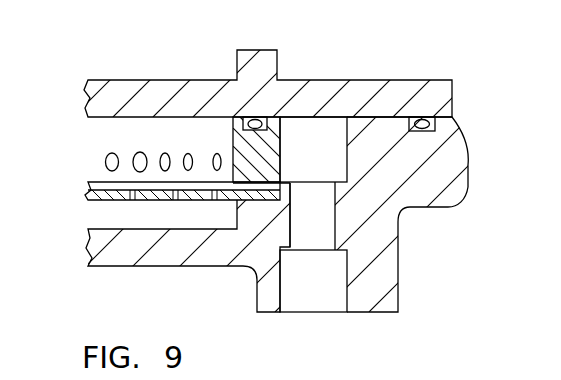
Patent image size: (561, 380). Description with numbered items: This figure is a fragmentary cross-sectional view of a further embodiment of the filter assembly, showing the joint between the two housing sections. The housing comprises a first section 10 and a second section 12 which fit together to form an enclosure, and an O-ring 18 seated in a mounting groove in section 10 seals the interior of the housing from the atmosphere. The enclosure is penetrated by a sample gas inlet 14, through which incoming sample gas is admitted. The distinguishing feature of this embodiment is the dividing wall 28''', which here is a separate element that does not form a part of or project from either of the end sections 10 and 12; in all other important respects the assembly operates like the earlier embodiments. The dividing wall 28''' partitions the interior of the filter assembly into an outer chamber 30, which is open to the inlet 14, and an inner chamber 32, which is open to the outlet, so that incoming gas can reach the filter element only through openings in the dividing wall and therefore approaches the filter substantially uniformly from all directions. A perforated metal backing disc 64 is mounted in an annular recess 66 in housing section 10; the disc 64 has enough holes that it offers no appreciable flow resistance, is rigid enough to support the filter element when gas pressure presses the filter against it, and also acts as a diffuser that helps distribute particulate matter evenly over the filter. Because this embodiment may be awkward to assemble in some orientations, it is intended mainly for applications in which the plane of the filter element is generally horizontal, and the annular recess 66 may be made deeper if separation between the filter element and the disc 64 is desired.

The first housing section 10 is at (157, 266).
The second housing section 12 is at (176, 80).
The sample gas inlet 14 is at (307, 288).
The O-ring 18 is at (423, 115).
The dividing wall 28''' is at (249, 97).
The outer chamber 30 is at (304, 140).
The inner chamber 32 is at (148, 132).
The perforated metal backing disc 64 is at (99, 200).
The annular recess 66 is at (254, 194).